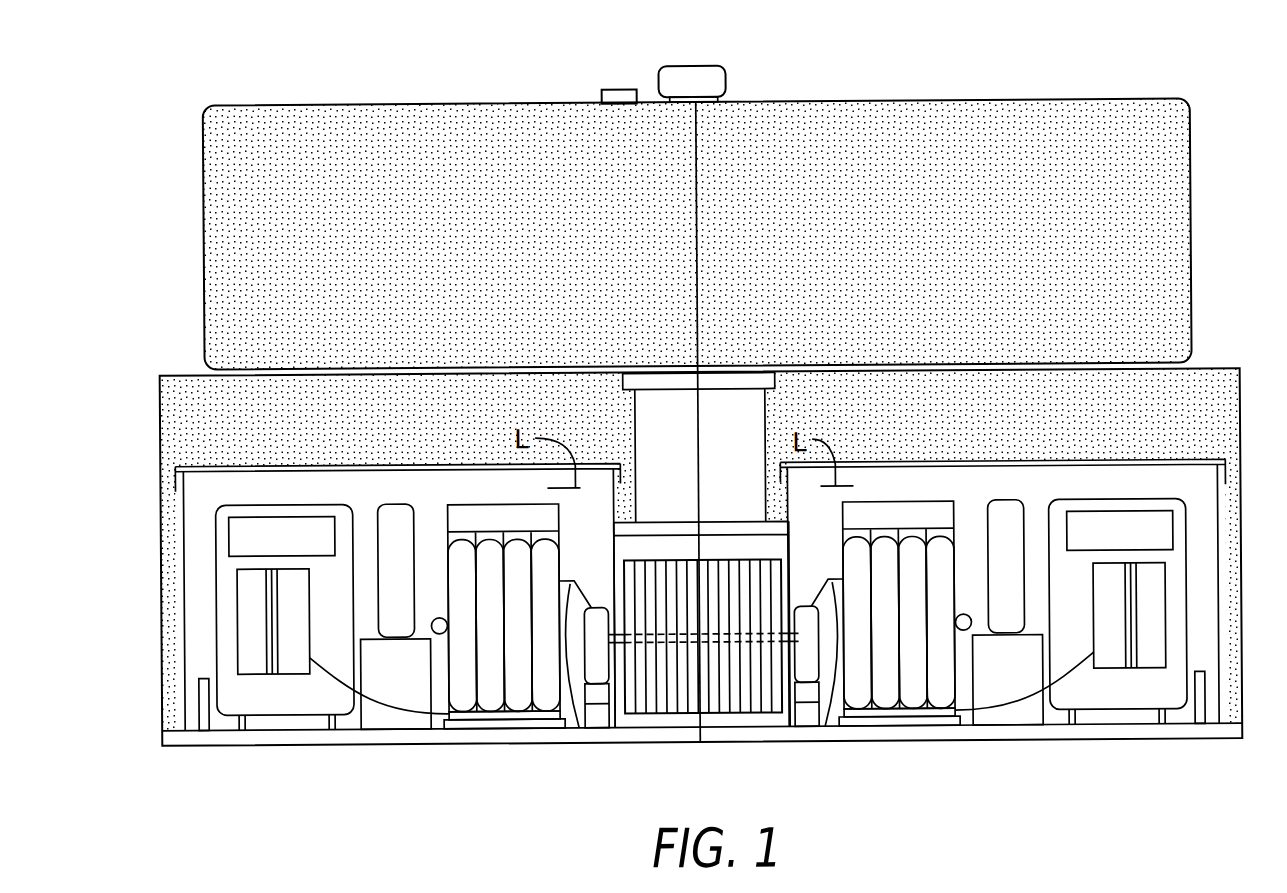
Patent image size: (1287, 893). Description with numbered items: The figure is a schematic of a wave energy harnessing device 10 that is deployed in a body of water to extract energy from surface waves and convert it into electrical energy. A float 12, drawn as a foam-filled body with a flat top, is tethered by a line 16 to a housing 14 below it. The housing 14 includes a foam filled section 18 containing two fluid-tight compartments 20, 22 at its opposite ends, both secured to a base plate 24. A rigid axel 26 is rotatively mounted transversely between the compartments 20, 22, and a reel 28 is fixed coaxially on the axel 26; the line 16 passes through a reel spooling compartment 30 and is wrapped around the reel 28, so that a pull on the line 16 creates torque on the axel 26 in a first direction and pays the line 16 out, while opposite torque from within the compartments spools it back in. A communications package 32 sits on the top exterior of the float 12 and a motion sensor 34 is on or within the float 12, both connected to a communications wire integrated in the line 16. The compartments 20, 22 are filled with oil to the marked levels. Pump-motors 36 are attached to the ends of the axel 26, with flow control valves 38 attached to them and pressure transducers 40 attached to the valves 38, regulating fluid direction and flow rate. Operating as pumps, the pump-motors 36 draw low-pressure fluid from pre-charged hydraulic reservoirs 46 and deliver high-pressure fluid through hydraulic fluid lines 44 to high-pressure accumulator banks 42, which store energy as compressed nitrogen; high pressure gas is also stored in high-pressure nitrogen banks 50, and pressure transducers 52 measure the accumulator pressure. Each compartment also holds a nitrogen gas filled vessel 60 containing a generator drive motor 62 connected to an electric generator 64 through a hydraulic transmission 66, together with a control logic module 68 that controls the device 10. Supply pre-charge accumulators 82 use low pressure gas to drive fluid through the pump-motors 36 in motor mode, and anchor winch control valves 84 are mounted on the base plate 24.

The wave energy harnessing device 10 is at (106, 162).
The float 12 is at (749, 120).
The housing 14 is at (1205, 368).
The line 16 is at (697, 228).
The foam filled section 18 is at (910, 398).
The fluid-tight compartment 20 is at (378, 446).
The fluid-tight compartment 22 is at (957, 438).
The base plate 24 is at (975, 732).
The axel 26 is at (620, 637).
The reel 28 is at (733, 587).
The reel spooling compartment 30 is at (728, 418).
The communications package 32 is at (697, 68).
The motion sensor 34 is at (606, 89).
The pump-motor 36 is at (600, 607).
The flow control valve 38 is at (598, 700).
The pressure transducer 40 is at (597, 720).
The high-pressure accumulator bank 42 is at (513, 673).
The hydraulic fluid line 44 is at (418, 722).
The pre-charged hydraulic reservoir 46 is at (911, 531).
The high-pressure nitrogen bank 50 is at (1019, 683).
The pressure transducer 52 is at (438, 616).
The nitrogen gas filled vessel 60 is at (213, 597).
The generator drive motor 62 is at (1121, 627).
The electric generator 64 is at (1163, 627).
The hydraulic transmission 66 is at (272, 664).
The control logic module 68 is at (1133, 551).
The supply pre-charge accumulator 82 is at (1019, 580).
The anchor winch control valve 84 is at (200, 727).